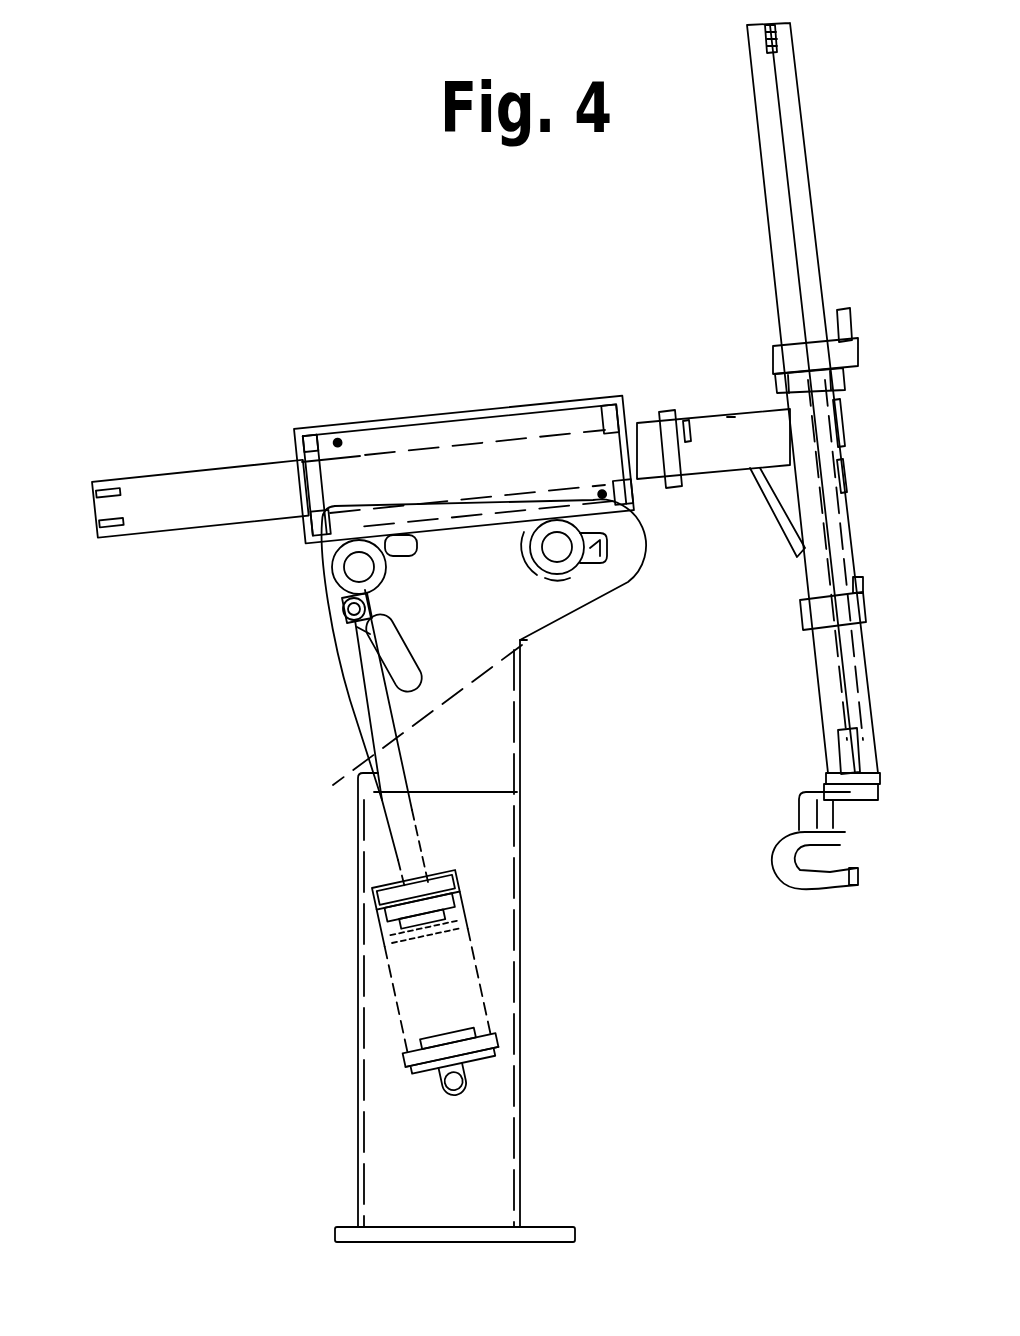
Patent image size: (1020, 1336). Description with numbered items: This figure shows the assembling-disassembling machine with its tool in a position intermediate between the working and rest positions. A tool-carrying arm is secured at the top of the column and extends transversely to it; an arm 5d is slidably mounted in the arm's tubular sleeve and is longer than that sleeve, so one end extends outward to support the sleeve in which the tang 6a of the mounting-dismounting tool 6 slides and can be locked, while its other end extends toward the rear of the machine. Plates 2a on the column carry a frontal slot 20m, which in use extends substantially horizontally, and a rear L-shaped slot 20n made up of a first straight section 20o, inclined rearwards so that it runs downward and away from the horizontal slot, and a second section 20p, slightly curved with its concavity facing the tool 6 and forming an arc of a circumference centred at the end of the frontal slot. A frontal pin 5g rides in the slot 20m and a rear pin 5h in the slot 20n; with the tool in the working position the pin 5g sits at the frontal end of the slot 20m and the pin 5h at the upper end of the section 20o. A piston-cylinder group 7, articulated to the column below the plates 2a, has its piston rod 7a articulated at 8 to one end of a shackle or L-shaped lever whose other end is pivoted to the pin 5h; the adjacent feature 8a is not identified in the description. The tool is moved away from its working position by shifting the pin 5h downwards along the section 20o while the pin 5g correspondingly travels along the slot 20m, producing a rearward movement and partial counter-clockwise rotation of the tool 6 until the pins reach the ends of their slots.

The plates 2a is at (477, 793).
The arm 5d is at (183, 477).
The frontal pin 5g is at (557, 545).
The rear pin 5h is at (359, 565).
The mounting-dismounting tool 6 is at (808, 883).
The tang 6a is at (778, 312).
The piston-cylinder group 7 is at (370, 977).
The piston rod 7a is at (377, 725).
The articulation 8 is at (340, 602).
The pivot pin bearing 8a is at (347, 603).
The frontal slot 20m is at (607, 552).
The rear L-shaped slot 20n is at (357, 632).
The first straight section 20o is at (397, 547).
The second section 20p is at (393, 647).